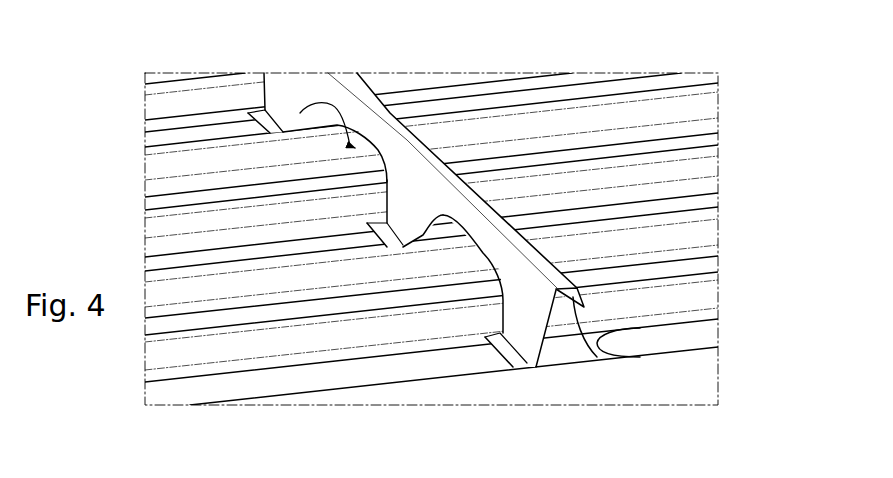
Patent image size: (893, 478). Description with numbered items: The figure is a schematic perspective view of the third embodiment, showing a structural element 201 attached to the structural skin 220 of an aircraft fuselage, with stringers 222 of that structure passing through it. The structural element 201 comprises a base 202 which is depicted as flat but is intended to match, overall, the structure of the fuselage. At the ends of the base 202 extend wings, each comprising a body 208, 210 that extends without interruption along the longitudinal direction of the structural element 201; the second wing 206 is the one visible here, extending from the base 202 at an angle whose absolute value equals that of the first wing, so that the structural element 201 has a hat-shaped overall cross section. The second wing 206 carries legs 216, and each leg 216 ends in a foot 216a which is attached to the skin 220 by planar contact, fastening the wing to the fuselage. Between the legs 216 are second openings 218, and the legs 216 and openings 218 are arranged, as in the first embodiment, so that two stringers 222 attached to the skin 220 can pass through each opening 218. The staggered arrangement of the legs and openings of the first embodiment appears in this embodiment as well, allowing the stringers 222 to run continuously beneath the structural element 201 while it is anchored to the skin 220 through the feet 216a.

The structural element 201 is at (746, 109).
The base 202 is at (473, 198).
The second wing 206 is at (363, 90).
The body 208 is at (582, 249).
The body 210 is at (407, 180).
The leg 216 is at (278, 100).
The foot 216a is at (265, 113).
The second opening 218 is at (329, 176).
The skin 220 is at (361, 373).
The stringer 222 is at (567, 118).